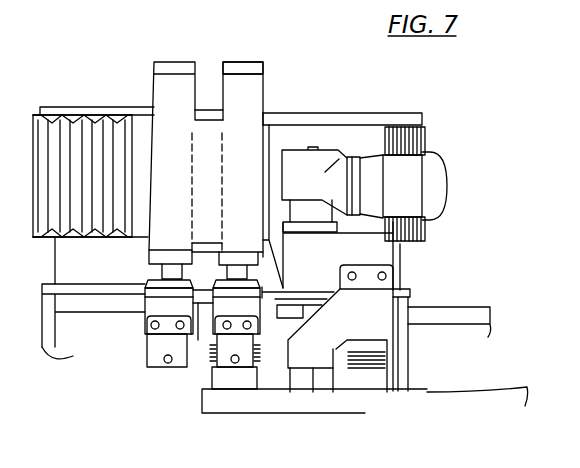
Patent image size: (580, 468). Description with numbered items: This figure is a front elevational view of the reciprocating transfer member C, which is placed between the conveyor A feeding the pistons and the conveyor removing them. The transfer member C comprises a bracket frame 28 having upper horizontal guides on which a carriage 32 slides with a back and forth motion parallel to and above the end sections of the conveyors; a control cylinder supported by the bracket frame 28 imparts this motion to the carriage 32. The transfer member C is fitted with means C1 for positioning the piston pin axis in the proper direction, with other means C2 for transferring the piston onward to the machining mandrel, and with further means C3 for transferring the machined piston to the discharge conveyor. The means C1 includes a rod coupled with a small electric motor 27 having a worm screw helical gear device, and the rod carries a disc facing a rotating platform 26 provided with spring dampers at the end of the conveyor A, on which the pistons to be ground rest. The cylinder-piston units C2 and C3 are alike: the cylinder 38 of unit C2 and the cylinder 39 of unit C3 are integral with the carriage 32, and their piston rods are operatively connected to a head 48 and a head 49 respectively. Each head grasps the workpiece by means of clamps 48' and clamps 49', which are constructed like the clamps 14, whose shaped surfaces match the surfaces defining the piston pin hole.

The further means C3 is at (152, 90).
The other means C2 is at (268, 84).
The transfer member C is at (307, 111).
The means for positioning the piston pin axis C1 is at (448, 171).
The cylinder 38 is at (238, 85).
The carriage 32 is at (206, 130).
The bracket frame 28 is at (361, 120).
The small electric motor 27 is at (415, 165).
The cylinder 39 is at (165, 233).
The head 49 is at (151, 317).
The clamps 49' is at (145, 371).
The head 48 is at (273, 311).
The clamps 48' is at (235, 392).
The platform 26 is at (210, 405).
The clamps 14 is at (325, 358).
The conveyor A is at (437, 402).